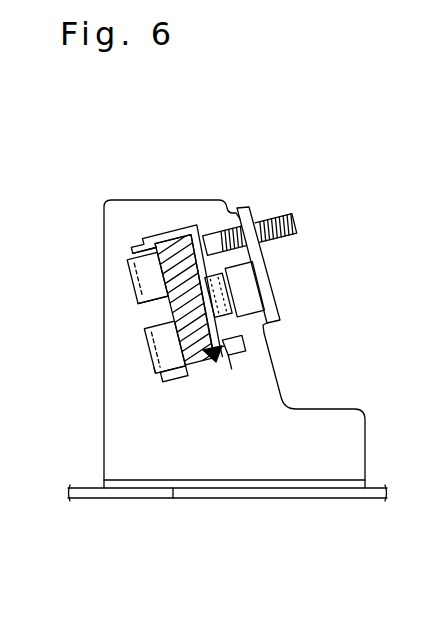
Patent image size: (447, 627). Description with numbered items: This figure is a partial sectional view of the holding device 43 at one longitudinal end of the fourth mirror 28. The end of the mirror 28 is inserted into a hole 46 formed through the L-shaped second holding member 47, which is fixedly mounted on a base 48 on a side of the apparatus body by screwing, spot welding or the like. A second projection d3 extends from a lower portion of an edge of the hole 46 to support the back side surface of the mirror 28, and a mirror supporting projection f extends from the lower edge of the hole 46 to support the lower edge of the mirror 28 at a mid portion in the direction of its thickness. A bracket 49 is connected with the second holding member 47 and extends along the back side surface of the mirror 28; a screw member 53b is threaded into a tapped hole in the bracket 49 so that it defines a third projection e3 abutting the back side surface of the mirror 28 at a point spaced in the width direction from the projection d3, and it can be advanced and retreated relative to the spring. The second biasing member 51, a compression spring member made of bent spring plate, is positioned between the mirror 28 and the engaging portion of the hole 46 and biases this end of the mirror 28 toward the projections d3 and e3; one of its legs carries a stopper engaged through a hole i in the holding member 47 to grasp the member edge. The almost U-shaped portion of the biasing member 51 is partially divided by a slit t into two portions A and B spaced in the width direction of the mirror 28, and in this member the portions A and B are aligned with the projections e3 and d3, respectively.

The holding device 43 is at (130, 179).
The fourth mirror 28 is at (198, 232).
The screw member 53b is at (277, 216).
The bracket 49 is at (270, 275).
The hole 46 is at (232, 370).
The second holding member 47 is at (173, 498).
The base 48 is at (83, 488).
The second biasing member 51 is at (158, 380).
The portion A is at (132, 262).
The portion B is at (145, 363).
The slit t is at (143, 315).
The third projection e3 is at (150, 278).
The second projection d3 is at (146, 333).
The hole i is at (243, 273).
The mirror supporting projection f is at (232, 348).